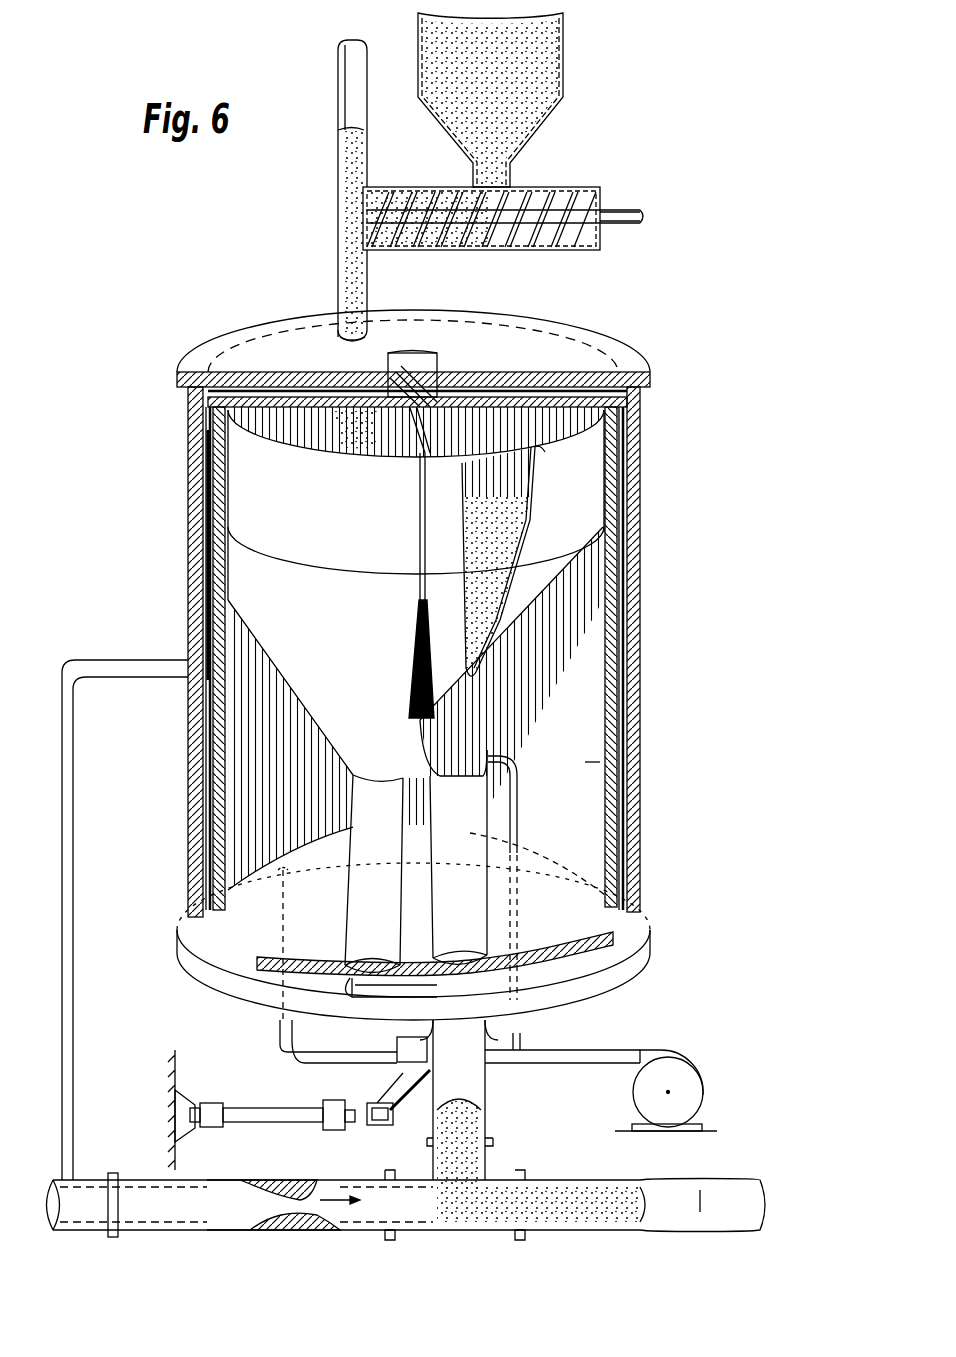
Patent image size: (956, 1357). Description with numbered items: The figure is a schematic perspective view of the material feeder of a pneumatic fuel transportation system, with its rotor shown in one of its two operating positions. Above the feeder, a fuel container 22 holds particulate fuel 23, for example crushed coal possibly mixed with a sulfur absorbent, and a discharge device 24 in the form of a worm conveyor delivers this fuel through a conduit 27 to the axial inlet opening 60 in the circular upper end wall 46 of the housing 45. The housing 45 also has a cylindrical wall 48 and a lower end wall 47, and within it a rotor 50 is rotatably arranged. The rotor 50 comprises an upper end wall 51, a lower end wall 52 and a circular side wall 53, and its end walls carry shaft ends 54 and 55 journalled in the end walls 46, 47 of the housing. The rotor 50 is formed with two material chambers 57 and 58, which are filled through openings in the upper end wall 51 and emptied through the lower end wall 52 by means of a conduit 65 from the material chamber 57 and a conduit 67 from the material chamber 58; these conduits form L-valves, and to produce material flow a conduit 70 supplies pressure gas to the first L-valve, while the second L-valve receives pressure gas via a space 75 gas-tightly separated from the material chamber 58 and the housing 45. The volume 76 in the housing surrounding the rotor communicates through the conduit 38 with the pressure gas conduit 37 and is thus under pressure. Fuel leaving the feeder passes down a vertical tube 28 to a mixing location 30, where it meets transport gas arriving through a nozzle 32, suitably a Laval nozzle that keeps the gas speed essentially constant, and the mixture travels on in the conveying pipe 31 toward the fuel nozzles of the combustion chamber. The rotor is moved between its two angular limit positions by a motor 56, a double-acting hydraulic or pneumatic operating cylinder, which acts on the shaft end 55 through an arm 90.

The fuel container 22 is at (563, 14).
The particulate fuel 23 is at (555, 62).
The conduit 27 is at (352, 163).
The discharge device 24 is at (430, 248).
The axial inlet opening 60 is at (334, 335).
The shaft end 54 is at (424, 352).
The upper end wall 46 is at (625, 357).
The upper end wall 51 is at (640, 400).
The material chamber 57 is at (607, 455).
The circular side wall 53 is at (620, 522).
The housing 45 is at (644, 568).
The cylindrical wall 48 is at (641, 602).
The rotor 50 is at (622, 660).
The space 75 is at (585, 762).
The conduit 70 is at (516, 805).
The conduit 65 is at (480, 880).
The lower end wall 52 is at (600, 921).
The lower end wall 47 is at (620, 950).
The material chamber 58 is at (205, 450).
The volume 76 is at (208, 557).
The conduit 38 is at (128, 668).
The conduit 67 is at (370, 862).
The shaft end 55 is at (400, 1062).
The vertical tube 28 is at (462, 1086).
The conveying pipe 31 is at (700, 1190).
The pressure gas conduit 37 is at (140, 1195).
The motor 56 is at (250, 1125).
The nozzle 32 is at (278, 1180).
The mixing location 30 is at (317, 1180).
The arm 90 is at (398, 1124).